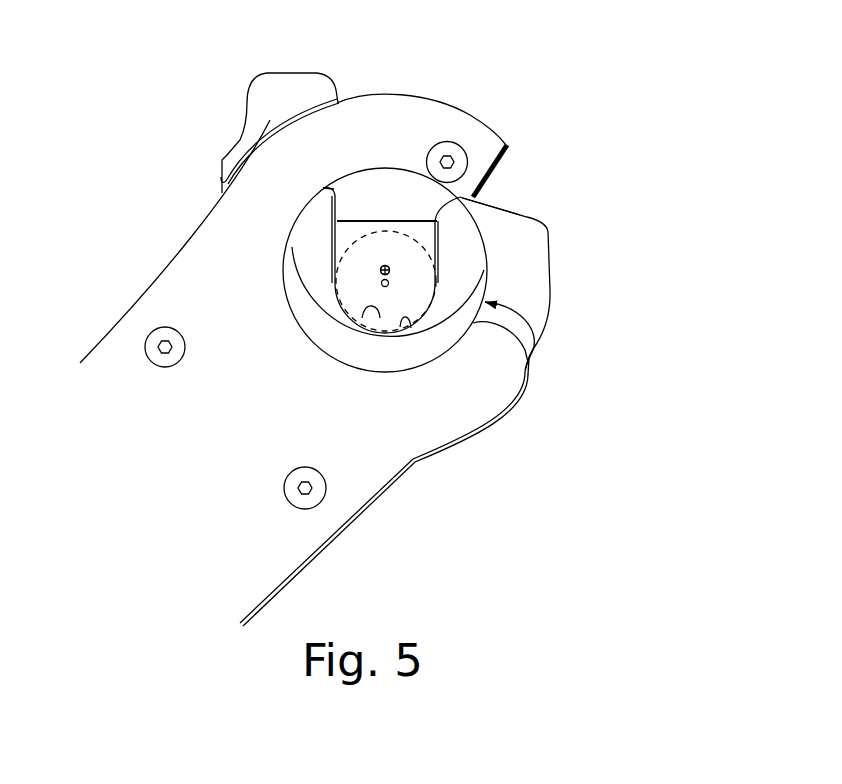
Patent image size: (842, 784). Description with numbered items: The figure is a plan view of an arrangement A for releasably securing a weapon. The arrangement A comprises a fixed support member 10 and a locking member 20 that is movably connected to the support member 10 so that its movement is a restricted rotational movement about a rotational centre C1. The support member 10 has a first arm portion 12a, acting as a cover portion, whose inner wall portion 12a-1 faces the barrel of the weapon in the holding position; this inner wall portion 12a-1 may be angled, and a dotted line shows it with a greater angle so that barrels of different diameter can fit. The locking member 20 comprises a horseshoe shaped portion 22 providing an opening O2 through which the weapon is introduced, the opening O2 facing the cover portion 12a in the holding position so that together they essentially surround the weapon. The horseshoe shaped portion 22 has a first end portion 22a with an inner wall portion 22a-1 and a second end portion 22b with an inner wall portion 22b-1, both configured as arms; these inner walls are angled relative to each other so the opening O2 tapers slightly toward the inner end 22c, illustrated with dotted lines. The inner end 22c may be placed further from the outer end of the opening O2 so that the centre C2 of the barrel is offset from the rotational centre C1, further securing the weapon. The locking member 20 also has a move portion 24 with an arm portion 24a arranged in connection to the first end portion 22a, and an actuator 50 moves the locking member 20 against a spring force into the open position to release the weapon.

The support member 10 is at (406, 472).
The first arm portion 12a is at (350, 229).
The inner wall portion 12a-1 is at (532, 170).
The locking member 20 is at (556, 297).
The horseshoe shaped portion 22 is at (540, 325).
The first end portion 22a is at (323, 187).
The inner wall portion 22a-1 is at (345, 215).
The second end portion 22b is at (458, 199).
The inner wall portion 22b-1 is at (438, 216).
The inner end 22c is at (366, 322).
The move portion 24 is at (556, 258).
The arm portion 24a is at (519, 204).
The actuator 50 is at (243, 108).
The opening O2 is at (393, 258).
The rotational centre C1 is at (378, 274).
The centre C2 is at (398, 288).
The arrangement A is at (523, 100).